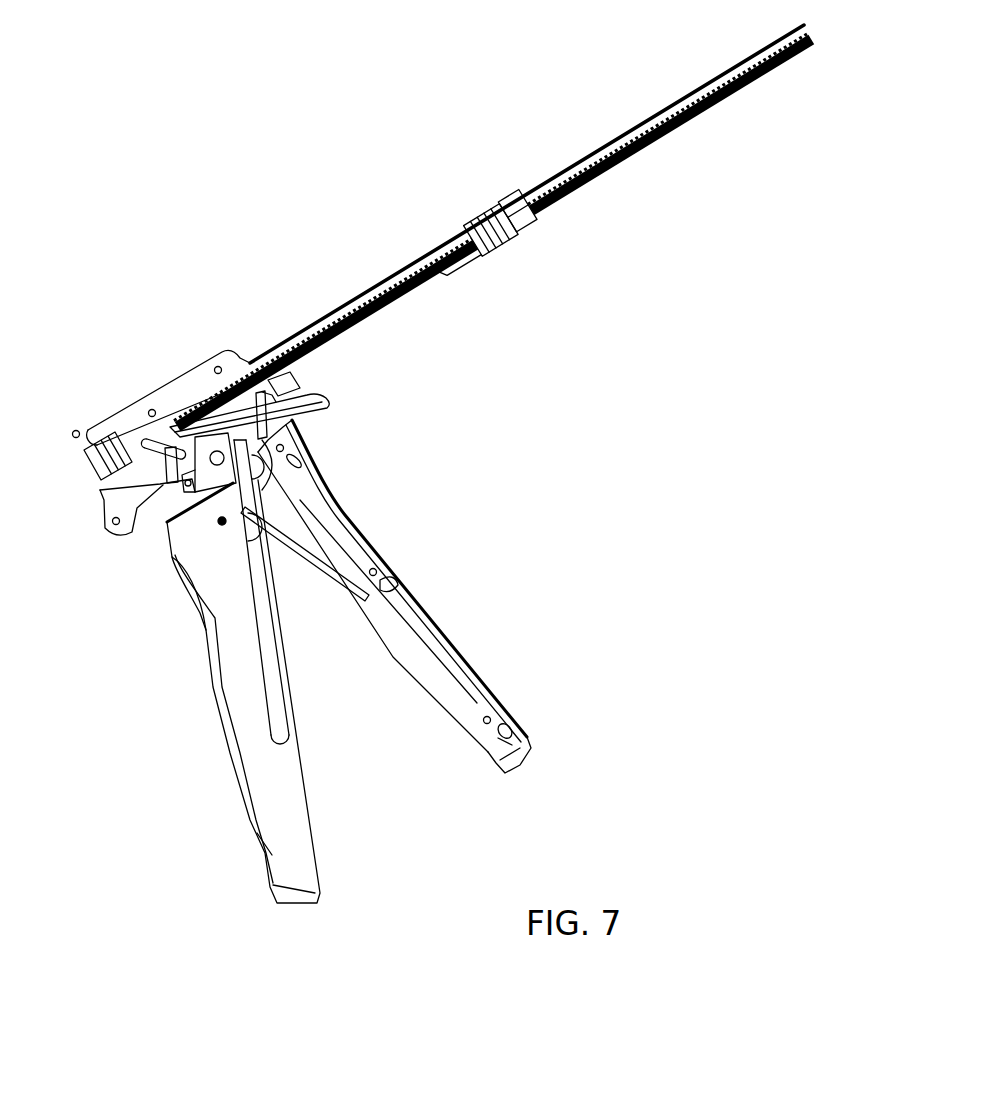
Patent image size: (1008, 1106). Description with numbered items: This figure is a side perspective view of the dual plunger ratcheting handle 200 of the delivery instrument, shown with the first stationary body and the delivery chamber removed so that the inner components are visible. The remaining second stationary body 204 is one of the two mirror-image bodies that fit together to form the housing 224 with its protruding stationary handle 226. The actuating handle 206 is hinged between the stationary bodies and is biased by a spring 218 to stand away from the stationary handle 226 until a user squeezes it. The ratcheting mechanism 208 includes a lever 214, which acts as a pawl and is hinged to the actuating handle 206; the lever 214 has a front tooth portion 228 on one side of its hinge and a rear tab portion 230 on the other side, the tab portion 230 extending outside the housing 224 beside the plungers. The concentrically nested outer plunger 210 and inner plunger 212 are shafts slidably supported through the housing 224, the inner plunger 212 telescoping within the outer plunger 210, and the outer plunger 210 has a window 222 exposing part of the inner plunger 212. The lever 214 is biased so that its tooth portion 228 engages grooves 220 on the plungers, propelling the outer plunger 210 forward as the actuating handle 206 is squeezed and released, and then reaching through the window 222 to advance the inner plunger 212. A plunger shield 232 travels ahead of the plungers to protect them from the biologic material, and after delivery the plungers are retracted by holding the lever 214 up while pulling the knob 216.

The dual plunger ratcheting handle 200 is at (673, 470).
The second stationary body 204 is at (487, 672).
The actuating handle 206 is at (230, 798).
The ratcheting mechanism 208 is at (191, 308).
The outer plunger 210 is at (450, 237).
The inner plunger 212 is at (623, 132).
The lever 214 is at (268, 483).
The knob 216 is at (527, 225).
The spring 218 is at (327, 567).
The grooves 220 is at (690, 115).
The window 222 is at (385, 326).
The housing 224 is at (125, 405).
The stationary handle 226 is at (453, 727).
The front tooth portion 228 is at (172, 440).
The rear tab portion 230 is at (330, 400).
The plunger shield 232 is at (95, 490).